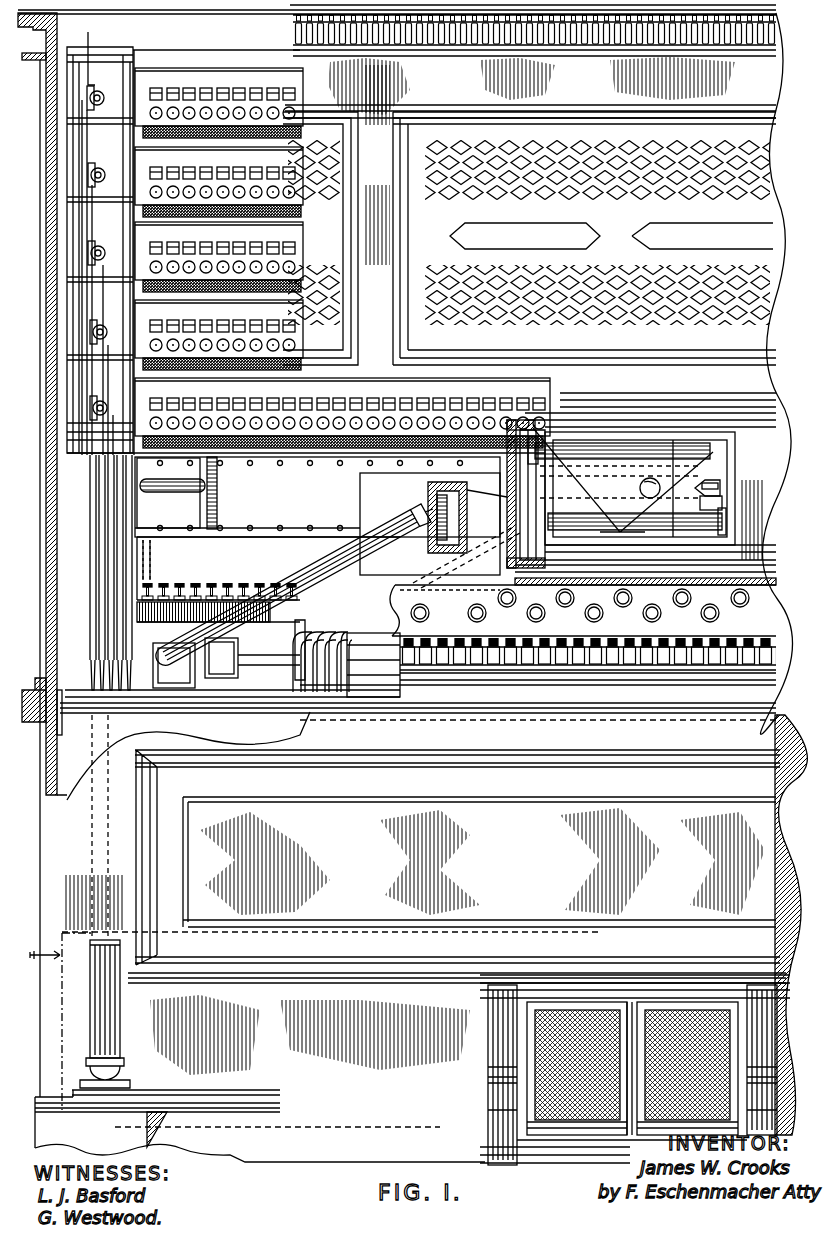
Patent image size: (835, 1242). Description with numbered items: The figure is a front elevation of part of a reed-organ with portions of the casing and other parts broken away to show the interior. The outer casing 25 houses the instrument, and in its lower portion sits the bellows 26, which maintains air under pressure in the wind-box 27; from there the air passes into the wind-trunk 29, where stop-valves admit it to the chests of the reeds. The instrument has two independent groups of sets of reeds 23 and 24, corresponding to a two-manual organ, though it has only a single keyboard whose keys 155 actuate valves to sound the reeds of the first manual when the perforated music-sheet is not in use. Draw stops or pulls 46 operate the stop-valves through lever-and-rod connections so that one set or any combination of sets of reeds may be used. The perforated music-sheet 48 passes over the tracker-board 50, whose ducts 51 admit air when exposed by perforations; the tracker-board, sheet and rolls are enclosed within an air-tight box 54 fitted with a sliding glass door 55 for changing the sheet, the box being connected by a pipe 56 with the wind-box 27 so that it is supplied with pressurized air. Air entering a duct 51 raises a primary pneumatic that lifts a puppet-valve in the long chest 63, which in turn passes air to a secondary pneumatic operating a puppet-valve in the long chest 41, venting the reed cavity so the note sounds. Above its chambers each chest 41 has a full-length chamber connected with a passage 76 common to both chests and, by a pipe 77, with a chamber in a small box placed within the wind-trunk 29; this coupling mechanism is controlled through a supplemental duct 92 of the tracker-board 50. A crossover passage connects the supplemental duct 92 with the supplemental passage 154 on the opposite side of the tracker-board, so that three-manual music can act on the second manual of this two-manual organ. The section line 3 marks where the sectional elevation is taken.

The section line 3 is at (89, 46).
The first group of sets of reeds 23 is at (342, 334).
The second group of sets of reeds 24 is at (219, 142).
The outer casing 25 is at (57, 572).
The bellows 26 is at (117, 742).
The wind-box 27 is at (229, 658).
The wind-trunk 29 is at (100, 368).
The long chest 41 is at (300, 492).
The draw stops or pulls 46 is at (470, 605).
The perforated music-sheet 48 is at (631, 474).
The tracker-board 50 is at (712, 500).
The ducts 51 is at (695, 487).
The air-tight box 54 is at (452, 497).
The sliding glass door 55 is at (646, 494).
The pipe 56 is at (294, 584).
The long chest 63 is at (268, 579).
The passage 76 is at (205, 510).
The pipe 77 is at (171, 493).
The supplemental duct 92 is at (466, 539).
The supplemental passage 154 is at (705, 492).
The keys 155 is at (398, 660).